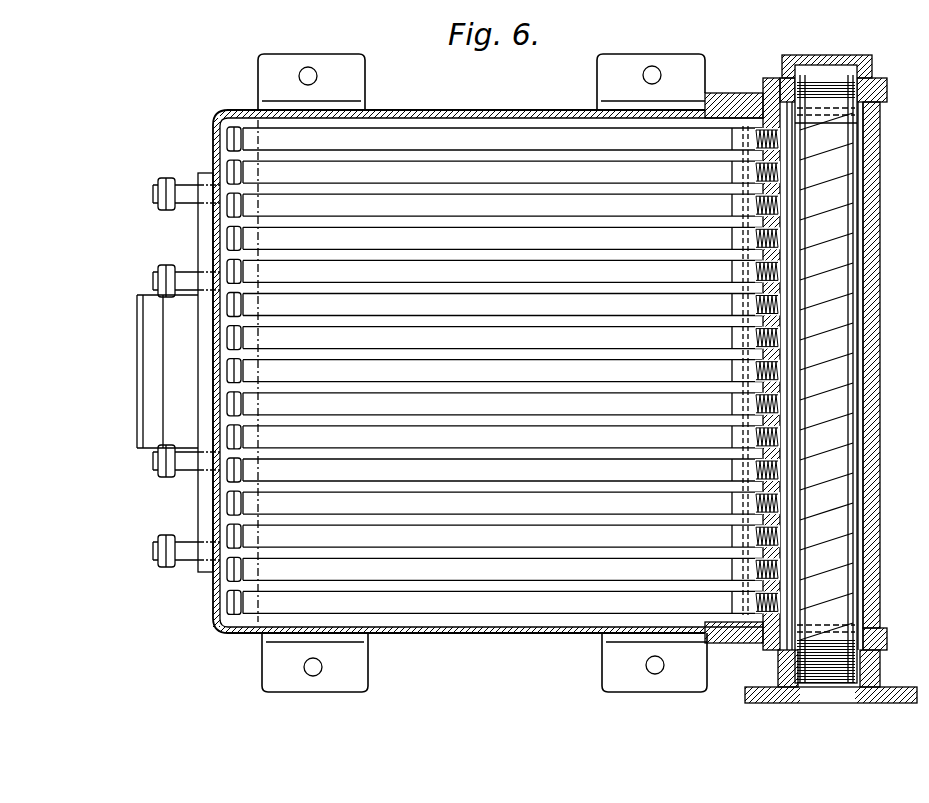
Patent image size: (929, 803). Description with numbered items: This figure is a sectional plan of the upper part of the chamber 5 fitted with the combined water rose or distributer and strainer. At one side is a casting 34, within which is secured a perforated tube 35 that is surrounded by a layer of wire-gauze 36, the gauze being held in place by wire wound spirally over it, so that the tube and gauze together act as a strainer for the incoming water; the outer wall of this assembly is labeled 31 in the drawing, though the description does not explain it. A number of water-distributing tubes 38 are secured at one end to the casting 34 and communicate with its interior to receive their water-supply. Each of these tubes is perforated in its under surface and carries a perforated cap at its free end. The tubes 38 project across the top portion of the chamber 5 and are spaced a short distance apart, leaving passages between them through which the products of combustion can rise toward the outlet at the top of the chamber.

The chamber 5 is at (504, 620).
The outer shell of heater unit 31 is at (881, 183).
The casting 34 is at (815, 714).
The perforated tube 35 is at (826, 374).
The wire-gauze 36 is at (858, 371).
The water-distributing tubes 38 is at (503, 371).